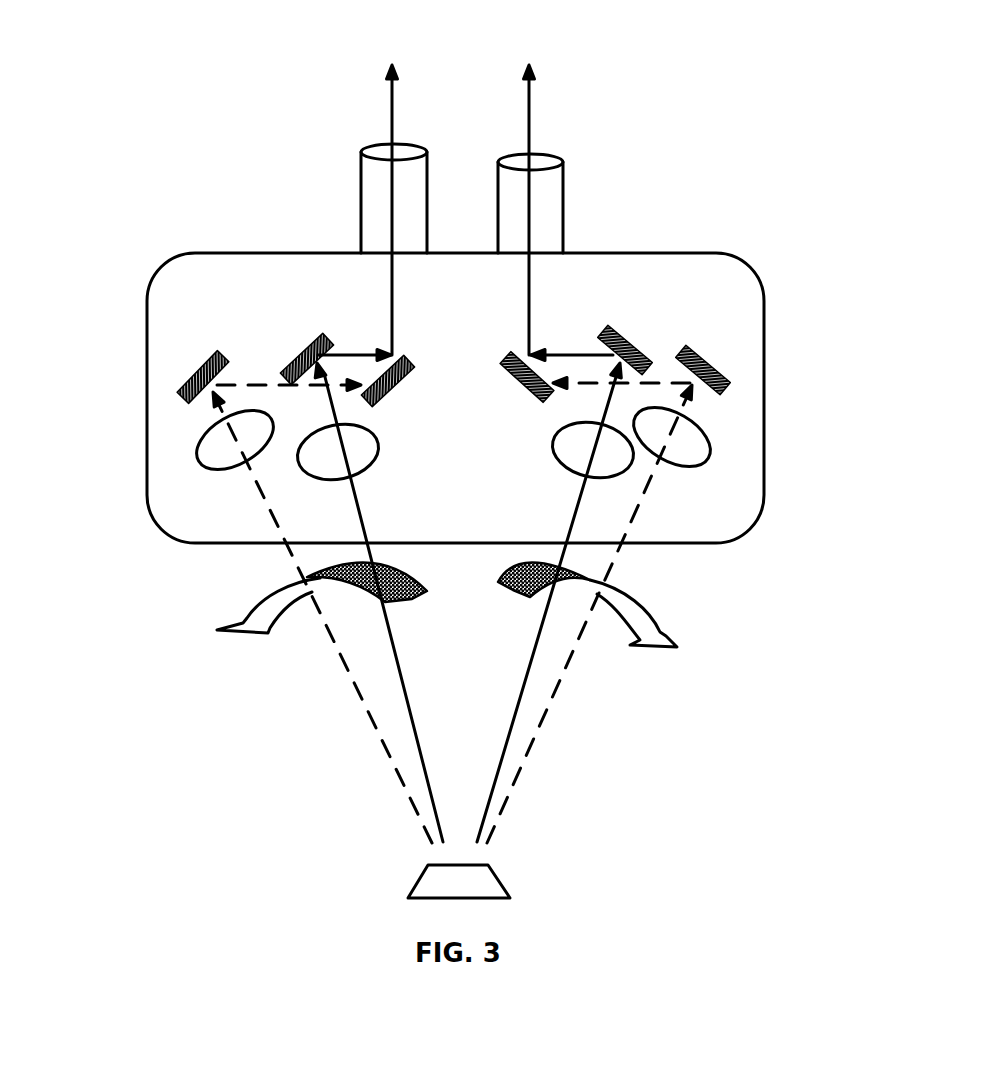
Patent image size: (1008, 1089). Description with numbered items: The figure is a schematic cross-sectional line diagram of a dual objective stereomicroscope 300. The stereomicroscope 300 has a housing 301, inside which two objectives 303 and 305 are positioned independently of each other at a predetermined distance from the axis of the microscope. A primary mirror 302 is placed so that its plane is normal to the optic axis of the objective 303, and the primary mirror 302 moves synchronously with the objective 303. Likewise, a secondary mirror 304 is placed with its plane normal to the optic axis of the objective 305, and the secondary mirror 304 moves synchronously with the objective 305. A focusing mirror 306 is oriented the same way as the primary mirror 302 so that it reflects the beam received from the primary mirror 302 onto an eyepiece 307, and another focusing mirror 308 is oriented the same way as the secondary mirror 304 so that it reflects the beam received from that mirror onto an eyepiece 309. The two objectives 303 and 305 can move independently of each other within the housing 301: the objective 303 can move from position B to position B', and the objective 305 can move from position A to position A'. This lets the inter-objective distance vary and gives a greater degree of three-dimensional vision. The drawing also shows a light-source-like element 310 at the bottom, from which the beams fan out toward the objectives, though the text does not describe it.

The dual objective stereomicroscope 300 is at (237, 693).
The housing 301 is at (750, 532).
The primary mirror 302 is at (305, 350).
The objective 303 is at (303, 475).
The secondary mirror 304 is at (622, 342).
The objective 305 is at (618, 478).
The focusing mirror 306 is at (405, 358).
The eyepiece 307 is at (361, 195).
The focusing mirror 308 is at (512, 358).
The eyepiece 309 is at (568, 188).
The light source 310 is at (503, 882).